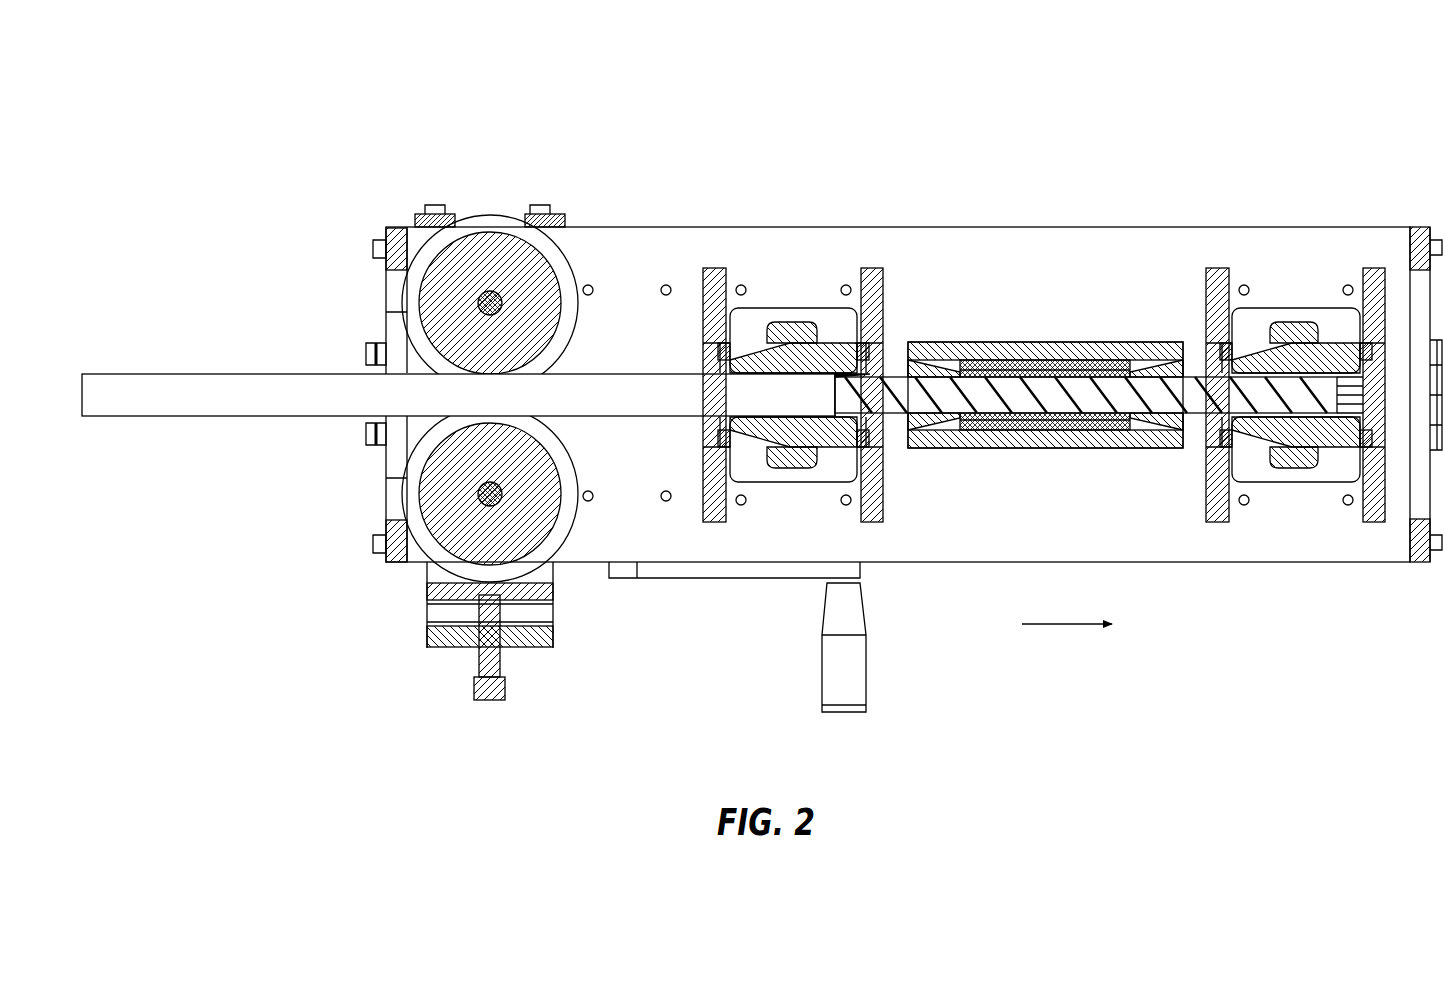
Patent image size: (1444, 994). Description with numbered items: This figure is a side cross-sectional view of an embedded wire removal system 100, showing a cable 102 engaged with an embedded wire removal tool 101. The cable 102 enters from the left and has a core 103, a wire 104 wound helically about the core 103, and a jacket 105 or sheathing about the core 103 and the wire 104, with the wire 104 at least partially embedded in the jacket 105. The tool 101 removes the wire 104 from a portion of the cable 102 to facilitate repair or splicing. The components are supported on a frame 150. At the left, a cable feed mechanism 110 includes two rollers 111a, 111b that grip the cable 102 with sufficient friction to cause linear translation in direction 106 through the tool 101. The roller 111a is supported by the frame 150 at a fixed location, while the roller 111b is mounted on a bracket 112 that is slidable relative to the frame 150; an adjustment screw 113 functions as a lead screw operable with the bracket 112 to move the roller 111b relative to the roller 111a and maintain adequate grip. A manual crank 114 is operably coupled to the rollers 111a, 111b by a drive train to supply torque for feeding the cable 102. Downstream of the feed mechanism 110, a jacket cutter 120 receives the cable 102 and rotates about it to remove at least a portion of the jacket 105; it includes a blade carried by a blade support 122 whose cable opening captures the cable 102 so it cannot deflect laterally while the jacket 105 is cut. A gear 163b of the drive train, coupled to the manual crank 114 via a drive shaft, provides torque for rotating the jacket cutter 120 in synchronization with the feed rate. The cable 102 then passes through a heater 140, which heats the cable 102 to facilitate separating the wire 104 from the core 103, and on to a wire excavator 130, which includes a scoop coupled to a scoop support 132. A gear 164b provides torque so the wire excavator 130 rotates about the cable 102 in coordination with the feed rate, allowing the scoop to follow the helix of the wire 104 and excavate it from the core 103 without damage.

The embedded wire removal system 100 is at (740, 78).
The embedded wire removal tool 101 is at (985, 185).
The cable 102 is at (232, 352).
The core 103 is at (1320, 404).
The wire 104 is at (1300, 390).
The jacket 105 is at (822, 397).
The direction 106 is at (1062, 624).
The cable feed mechanism 110 is at (486, 198).
The roller 111a is at (408, 292).
The roller 111b is at (408, 496).
The bracket 112 is at (427, 590).
The adjustment screw 113 is at (477, 685).
The manual crank 114 is at (866, 690).
The jacket cutter 120 is at (752, 330).
The blade support 122 is at (833, 350).
The wire excavator 130 is at (1254, 330).
The scoop support 132 is at (1327, 350).
The heater 140 is at (1065, 342).
The frame 150 is at (1143, 227).
The gear 163b is at (795, 330).
The gear 164b is at (1295, 330).